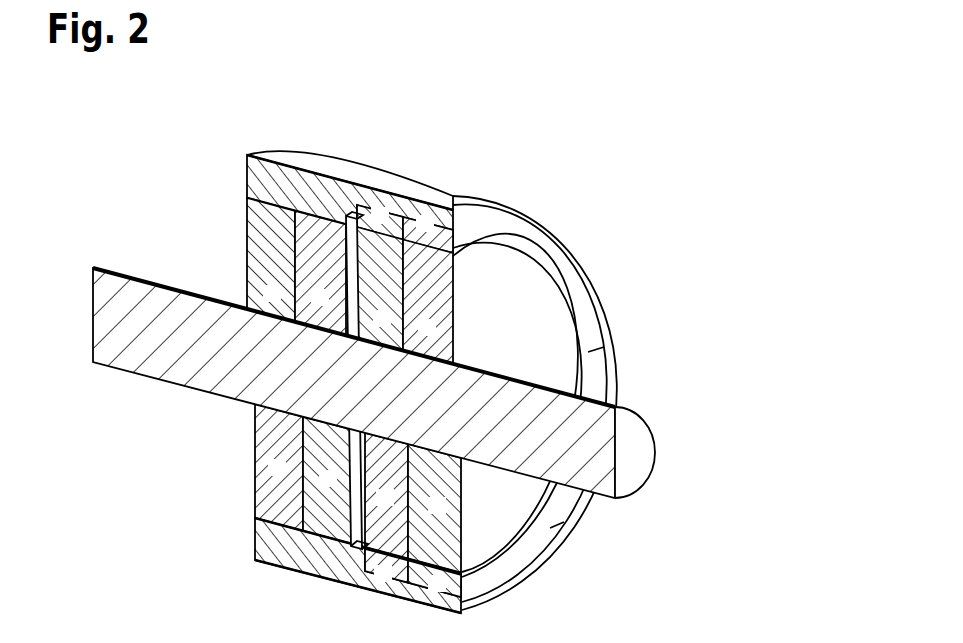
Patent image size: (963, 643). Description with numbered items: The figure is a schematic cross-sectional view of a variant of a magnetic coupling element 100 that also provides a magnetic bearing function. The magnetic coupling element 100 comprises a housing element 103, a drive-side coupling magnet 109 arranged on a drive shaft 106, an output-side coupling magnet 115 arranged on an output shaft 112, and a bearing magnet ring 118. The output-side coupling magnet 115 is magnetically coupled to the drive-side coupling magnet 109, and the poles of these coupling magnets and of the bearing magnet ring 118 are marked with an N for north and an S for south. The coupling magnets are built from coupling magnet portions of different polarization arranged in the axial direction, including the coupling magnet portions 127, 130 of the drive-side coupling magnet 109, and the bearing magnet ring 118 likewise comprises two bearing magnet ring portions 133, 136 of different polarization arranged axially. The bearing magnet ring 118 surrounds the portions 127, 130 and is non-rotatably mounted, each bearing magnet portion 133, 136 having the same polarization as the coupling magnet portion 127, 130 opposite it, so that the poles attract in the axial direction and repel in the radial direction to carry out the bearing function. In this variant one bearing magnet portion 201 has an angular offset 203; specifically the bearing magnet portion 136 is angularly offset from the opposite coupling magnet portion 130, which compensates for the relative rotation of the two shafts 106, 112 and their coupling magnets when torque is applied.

The magnetic coupling element 100 is at (176, 176).
The housing element 103 is at (305, 186).
The drive shaft 106 is at (598, 458).
The drive-side coupling magnet 109 is at (383, 293).
The output shaft 112 is at (147, 345).
The output-side coupling magnet 115 is at (283, 264).
The bearing magnet ring 118 is at (398, 198).
The coupling magnet portion 127 is at (414, 316).
The coupling magnet portion 130 is at (507, 325).
The bearing magnet ring portion 133 is at (364, 200).
The bearing magnet ring portion 136 is at (427, 223).
The bearing magnet portion 201 is at (544, 538).
The angular offset 203 is at (600, 359).